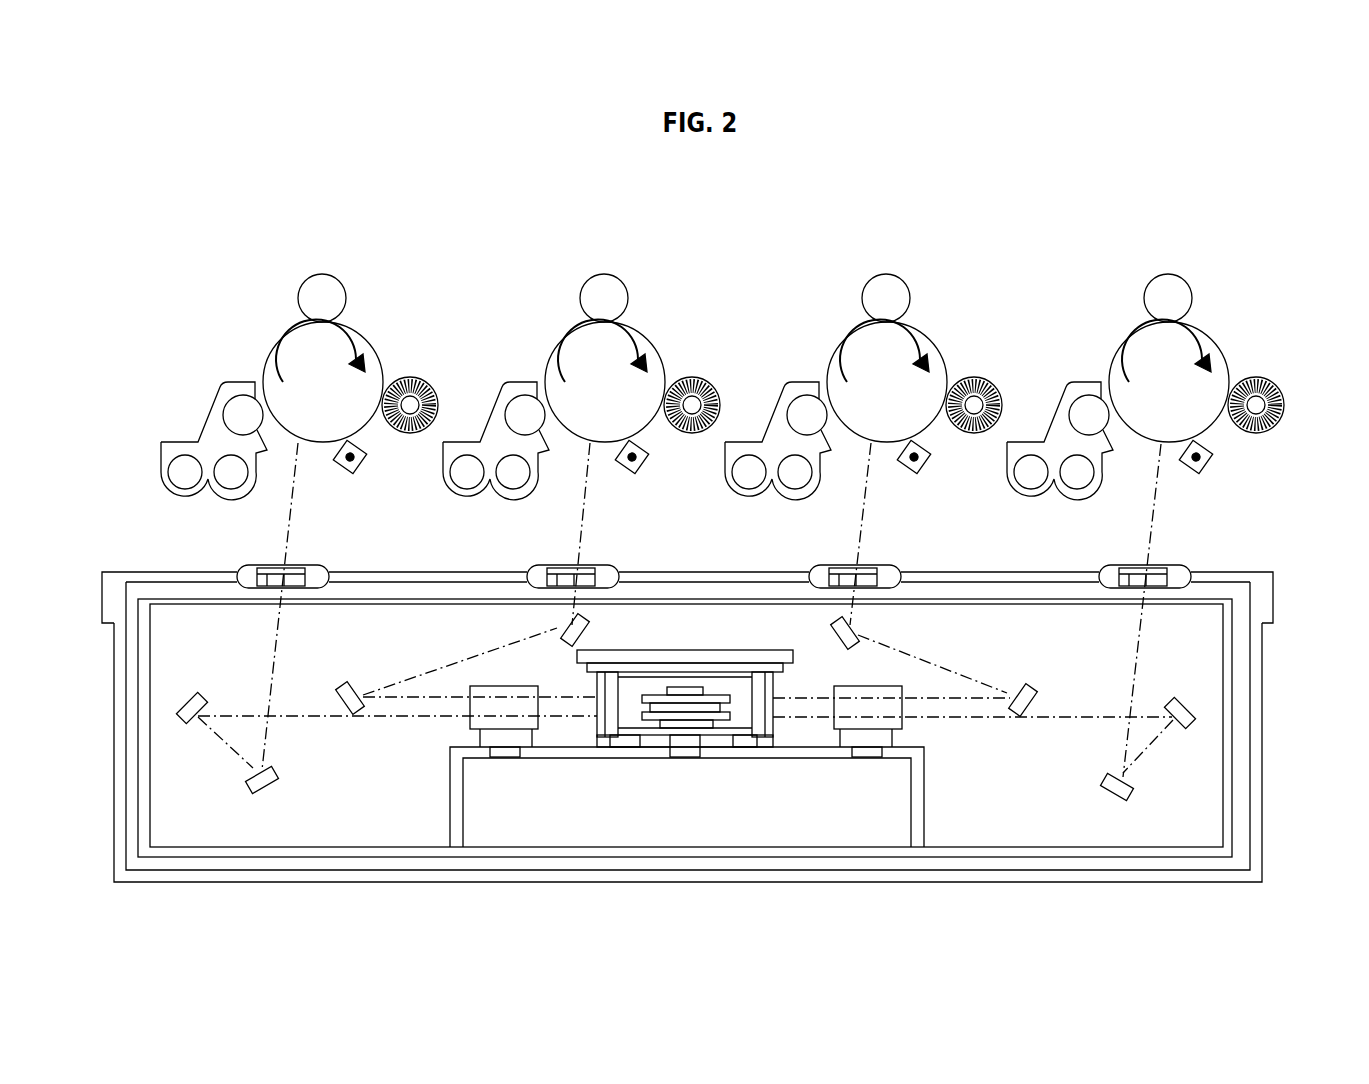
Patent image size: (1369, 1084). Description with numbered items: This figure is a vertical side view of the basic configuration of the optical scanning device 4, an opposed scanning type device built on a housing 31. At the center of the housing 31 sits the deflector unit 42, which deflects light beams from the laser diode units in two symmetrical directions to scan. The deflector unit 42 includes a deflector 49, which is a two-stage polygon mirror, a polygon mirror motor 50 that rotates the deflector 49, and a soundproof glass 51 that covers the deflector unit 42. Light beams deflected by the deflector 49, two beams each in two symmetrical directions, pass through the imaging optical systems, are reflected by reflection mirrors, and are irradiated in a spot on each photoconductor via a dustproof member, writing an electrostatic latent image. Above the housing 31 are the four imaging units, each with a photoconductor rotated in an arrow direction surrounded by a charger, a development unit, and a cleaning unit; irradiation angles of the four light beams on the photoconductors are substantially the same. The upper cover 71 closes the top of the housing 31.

The optical scanning device 4 is at (701, 647).
The housing 31 is at (114, 690).
The deflector unit 42 is at (678, 620).
The deflector 49 is at (717, 687).
The polygon mirror motor 50 is at (687, 748).
The soundproof glass 51 is at (597, 737).
The cover 71 is at (102, 577).